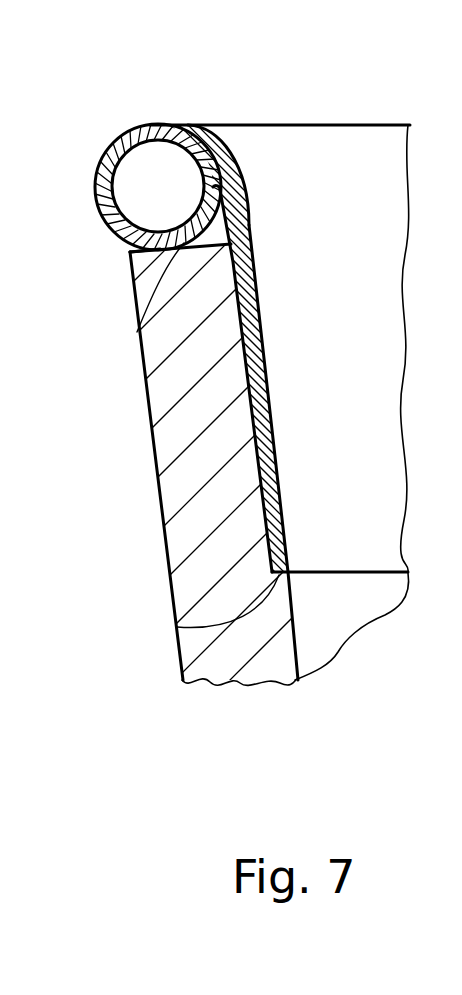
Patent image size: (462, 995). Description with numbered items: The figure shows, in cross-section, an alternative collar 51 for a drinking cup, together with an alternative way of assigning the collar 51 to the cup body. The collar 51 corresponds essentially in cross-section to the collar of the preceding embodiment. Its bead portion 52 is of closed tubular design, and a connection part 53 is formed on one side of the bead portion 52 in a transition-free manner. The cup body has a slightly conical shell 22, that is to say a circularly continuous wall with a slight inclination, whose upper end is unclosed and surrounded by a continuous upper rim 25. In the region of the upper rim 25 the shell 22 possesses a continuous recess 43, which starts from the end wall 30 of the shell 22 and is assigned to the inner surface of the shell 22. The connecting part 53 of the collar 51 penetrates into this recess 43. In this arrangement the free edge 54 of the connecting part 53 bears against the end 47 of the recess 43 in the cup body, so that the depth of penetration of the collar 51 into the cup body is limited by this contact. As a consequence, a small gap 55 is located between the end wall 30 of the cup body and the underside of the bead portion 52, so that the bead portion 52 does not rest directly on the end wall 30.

The collar 51 is at (73, 158).
The bead portion 52 is at (152, 127).
The connection part 53 is at (268, 390).
The free edge 54 is at (352, 573).
The gap 55 is at (129, 254).
The upper rim 25 is at (152, 282).
The end wall 30 is at (148, 352).
The recess 43 is at (257, 432).
The end of the recess 47 is at (177, 626).
The shell 22 is at (235, 663).